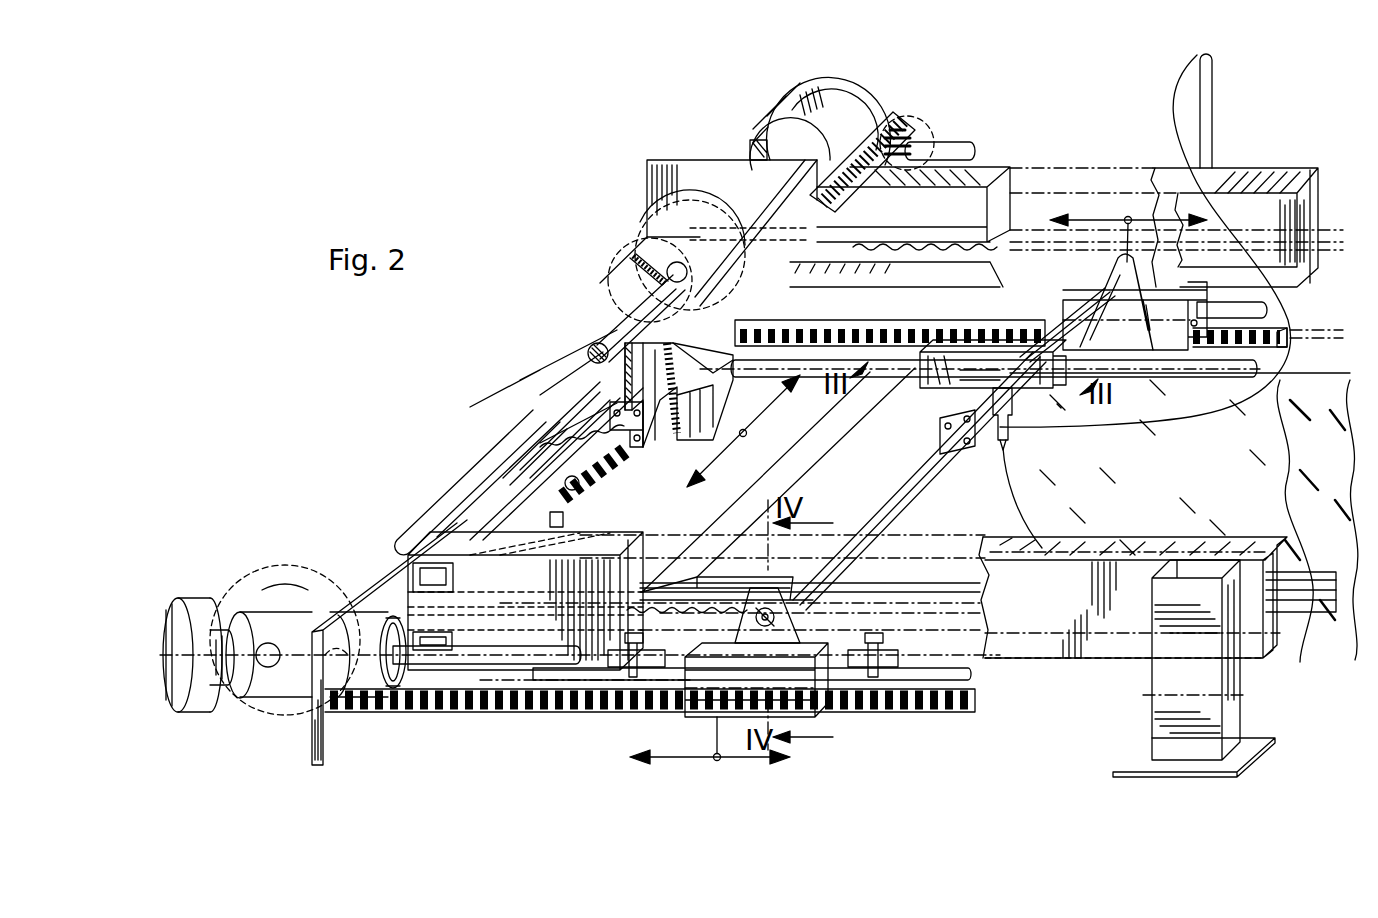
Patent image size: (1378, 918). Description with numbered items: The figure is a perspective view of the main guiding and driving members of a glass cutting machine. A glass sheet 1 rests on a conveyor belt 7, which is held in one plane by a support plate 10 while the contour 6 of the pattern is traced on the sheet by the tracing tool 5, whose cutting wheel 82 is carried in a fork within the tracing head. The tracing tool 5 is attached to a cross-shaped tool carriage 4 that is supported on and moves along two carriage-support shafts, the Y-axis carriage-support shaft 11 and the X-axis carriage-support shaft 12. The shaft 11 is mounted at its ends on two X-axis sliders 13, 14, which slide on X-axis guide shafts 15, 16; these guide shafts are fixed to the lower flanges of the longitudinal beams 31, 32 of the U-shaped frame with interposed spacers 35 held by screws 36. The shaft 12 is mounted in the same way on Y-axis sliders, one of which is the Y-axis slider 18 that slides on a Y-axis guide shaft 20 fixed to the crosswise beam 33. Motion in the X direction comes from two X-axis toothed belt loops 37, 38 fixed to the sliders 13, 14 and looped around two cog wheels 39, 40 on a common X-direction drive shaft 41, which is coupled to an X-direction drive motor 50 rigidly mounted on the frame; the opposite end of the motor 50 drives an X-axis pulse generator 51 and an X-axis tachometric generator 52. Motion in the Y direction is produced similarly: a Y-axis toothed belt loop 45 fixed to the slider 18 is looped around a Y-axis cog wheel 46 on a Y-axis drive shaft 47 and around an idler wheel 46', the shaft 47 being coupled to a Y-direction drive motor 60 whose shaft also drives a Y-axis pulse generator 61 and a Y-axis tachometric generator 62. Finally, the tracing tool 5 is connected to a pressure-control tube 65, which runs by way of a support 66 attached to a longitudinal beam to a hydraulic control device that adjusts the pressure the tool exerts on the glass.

The glass sheet 1 is at (1260, 447).
The cross-shaped tool carriage 4 is at (940, 383).
The tracing tool 5 is at (1003, 440).
The contour 6 is at (1012, 502).
The conveyor belt 7 is at (810, 452).
The support plate 10 is at (1325, 600).
The Y-axis carriage-support shaft 11 is at (900, 488).
The X-axis carriage-support shaft 12 is at (1196, 370).
The X-axis slider 13 is at (818, 648).
The X-axis slider 14 is at (1158, 285).
The X-axis guide shaft 15 is at (975, 682).
The X-axis guide shaft 16 is at (1270, 310).
The Y-axis slider 18 is at (640, 383).
The Y-axis guide shaft 20 is at (800, 290).
The longitudinal beam 31 is at (1105, 645).
The longitudinal beam 32 is at (985, 180).
The crosswise beam 33 is at (520, 470).
The spacer 35 is at (665, 652).
The screw 36 is at (640, 630).
The X-axis toothed belt loop 37 is at (712, 582).
The X-axis toothed belt loop 38 is at (650, 235).
The cog wheel 39 is at (283, 605).
The cog wheel 40 is at (620, 272).
The X-direction drive shaft 41 is at (415, 522).
The Y-axis toothed belt loop 45 is at (520, 495).
The Y-axis cog wheel 46 is at (402, 686).
The idler wheel 46' is at (913, 120).
The Y-axis drive shaft 47 is at (493, 666).
The X-direction drive motor 50 is at (763, 152).
The X-axis pulse generator 51 is at (790, 128).
The X-axis tachometric generator 52 is at (797, 88).
The Y-direction drive motor 60 is at (262, 675).
The Y-axis pulse generator 61 is at (215, 690).
The Y-axis tachometric generator 62 is at (190, 712).
The pressure-control tube 65 is at (1175, 107).
The support 66 is at (1212, 100).
The cutting wheel 82 is at (1000, 468).